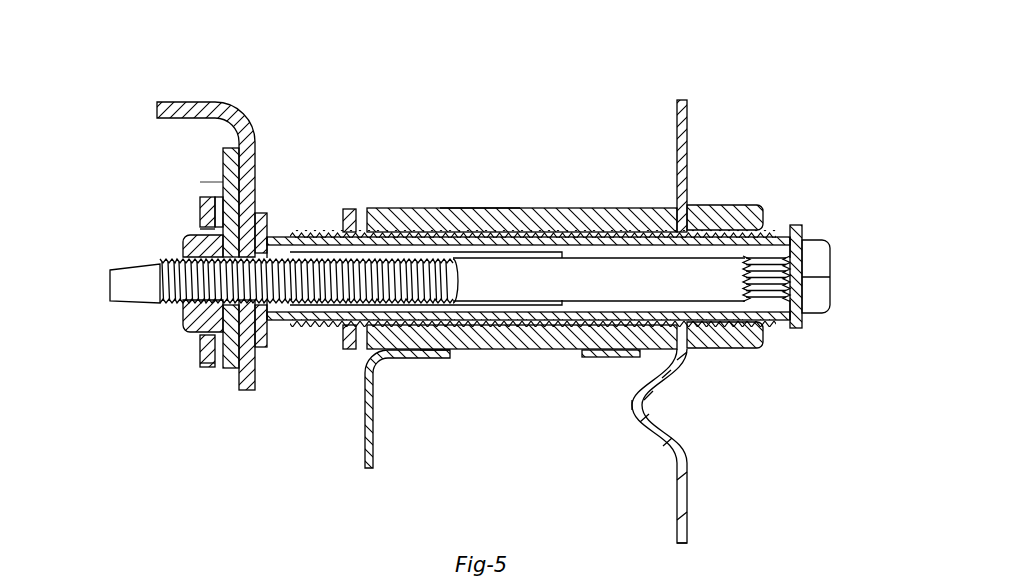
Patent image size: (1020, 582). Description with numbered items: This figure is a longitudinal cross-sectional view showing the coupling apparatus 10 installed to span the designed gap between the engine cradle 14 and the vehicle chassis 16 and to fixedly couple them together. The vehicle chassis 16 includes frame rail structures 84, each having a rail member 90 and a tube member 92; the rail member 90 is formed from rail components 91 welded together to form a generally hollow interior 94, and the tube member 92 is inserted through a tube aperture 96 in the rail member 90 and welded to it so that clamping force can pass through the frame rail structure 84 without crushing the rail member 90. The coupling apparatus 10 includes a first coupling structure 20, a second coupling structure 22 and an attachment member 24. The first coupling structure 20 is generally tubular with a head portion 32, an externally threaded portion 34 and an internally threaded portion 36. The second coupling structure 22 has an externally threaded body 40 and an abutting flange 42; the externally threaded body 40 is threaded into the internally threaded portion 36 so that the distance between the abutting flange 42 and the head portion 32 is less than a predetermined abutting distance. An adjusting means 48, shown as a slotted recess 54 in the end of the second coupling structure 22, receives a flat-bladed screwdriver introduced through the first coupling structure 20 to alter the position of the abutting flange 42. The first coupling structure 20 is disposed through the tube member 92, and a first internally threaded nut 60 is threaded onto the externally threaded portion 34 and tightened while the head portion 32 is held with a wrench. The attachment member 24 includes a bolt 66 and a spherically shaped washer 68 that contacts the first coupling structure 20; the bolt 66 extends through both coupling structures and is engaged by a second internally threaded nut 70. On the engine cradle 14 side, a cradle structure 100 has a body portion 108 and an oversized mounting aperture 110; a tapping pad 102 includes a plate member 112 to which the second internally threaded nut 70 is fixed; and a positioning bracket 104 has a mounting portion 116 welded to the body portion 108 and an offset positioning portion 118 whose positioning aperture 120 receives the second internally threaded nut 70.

The coupling apparatus 10 is at (778, 203).
The engine cradle 14 is at (172, 182).
The vehicle chassis 16 is at (702, 111).
The first coupling structure 20 is at (567, 233).
The second coupling structure 22 is at (373, 247).
The attachment member 24 is at (840, 285).
The head portion 32 is at (350, 215).
The externally threaded portion 34 is at (720, 331).
The internally threaded portion 36 is at (505, 237).
The externally threaded body 40 is at (323, 316).
The abutting flange 42 is at (262, 228).
The adjusting means 48 is at (565, 252).
The slotted recess 54 is at (535, 306).
The first internally threaded nut 60 is at (720, 215).
The bolt 66 is at (822, 243).
The spherically shaped washer 68 is at (800, 326).
The second internally threaded nut 70 is at (190, 322).
The frame rail structures 84 is at (700, 452).
The rail member 90 is at (686, 510).
The rail components 91 is at (633, 407).
The tube member 92 is at (480, 215).
The hollow interior 94 is at (482, 430).
The tube apertures 96 is at (410, 356).
The cradle structure 100 is at (262, 119).
The tapping pad 102 is at (240, 179).
The positioning bracket 104 is at (196, 213).
The body portion 108 is at (243, 127).
The oversized mounting aperture 110 is at (246, 307).
The plate member 112 is at (230, 348).
The mounting portion 116 is at (217, 200).
The positioning portion 118 is at (208, 365).
The positioning aperture 120 is at (207, 230).